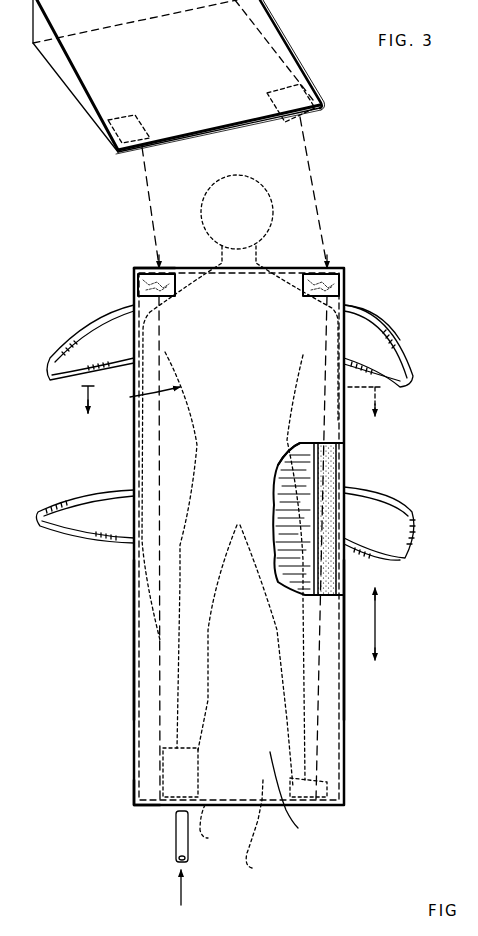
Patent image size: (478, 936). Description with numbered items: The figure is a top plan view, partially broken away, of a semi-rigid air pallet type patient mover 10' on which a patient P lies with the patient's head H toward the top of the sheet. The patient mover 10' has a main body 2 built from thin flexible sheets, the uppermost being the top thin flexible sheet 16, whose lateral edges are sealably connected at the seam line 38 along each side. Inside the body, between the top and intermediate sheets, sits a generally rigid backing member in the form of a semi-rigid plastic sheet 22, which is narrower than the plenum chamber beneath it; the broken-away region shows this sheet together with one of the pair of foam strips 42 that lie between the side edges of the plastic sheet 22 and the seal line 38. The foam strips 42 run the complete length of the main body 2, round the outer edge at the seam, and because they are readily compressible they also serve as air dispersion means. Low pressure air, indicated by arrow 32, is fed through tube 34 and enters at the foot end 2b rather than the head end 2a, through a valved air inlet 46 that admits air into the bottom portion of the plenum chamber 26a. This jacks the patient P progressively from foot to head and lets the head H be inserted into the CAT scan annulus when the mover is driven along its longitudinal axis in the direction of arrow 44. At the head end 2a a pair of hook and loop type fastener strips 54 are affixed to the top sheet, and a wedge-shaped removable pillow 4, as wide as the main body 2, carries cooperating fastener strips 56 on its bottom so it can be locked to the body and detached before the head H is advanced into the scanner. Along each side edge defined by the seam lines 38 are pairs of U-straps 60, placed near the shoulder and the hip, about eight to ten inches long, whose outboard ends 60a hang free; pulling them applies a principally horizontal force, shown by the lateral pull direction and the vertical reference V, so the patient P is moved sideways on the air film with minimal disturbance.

The removable pillow 4 is at (290, 36).
The hook and loop type fastener strips 56 is at (108, 150).
The hook and loop type fastener strips 54 is at (144, 273).
The patient mover main body 2 is at (130, 440).
The head end 2a is at (132, 292).
The foot end 2b is at (131, 803).
The patient mover 10' is at (392, 309).
The head of patient H is at (273, 230).
The U-straps 60 is at (68, 380).
The outboard ends of the straps 60a is at (418, 380).
The patient P is at (130, 397).
The vertical direction V is at (234, 401).
The foam strips 42 is at (345, 462).
The semi-rigid plastic sheet 22 is at (276, 470).
The seam line 38 is at (133, 632).
The arrow 44 is at (380, 612).
The top thin flexible sheet 16 is at (294, 797).
The valved air inlet 46 is at (218, 824).
The bottom portion of the plenum chamber 26a is at (266, 828).
The tube 34 is at (176, 840).
The arrow 32 is at (178, 893).